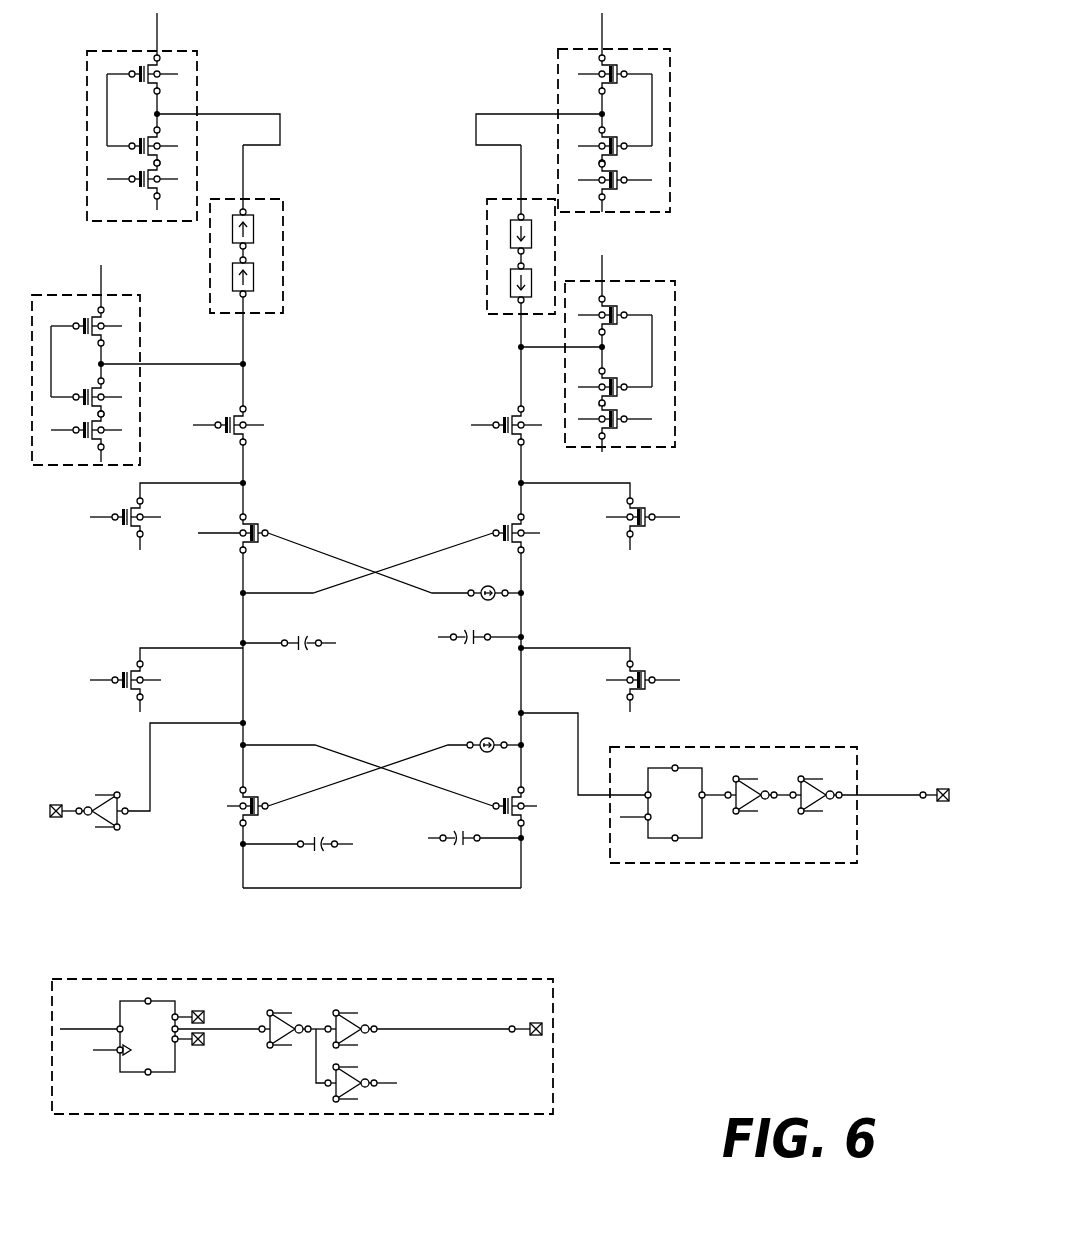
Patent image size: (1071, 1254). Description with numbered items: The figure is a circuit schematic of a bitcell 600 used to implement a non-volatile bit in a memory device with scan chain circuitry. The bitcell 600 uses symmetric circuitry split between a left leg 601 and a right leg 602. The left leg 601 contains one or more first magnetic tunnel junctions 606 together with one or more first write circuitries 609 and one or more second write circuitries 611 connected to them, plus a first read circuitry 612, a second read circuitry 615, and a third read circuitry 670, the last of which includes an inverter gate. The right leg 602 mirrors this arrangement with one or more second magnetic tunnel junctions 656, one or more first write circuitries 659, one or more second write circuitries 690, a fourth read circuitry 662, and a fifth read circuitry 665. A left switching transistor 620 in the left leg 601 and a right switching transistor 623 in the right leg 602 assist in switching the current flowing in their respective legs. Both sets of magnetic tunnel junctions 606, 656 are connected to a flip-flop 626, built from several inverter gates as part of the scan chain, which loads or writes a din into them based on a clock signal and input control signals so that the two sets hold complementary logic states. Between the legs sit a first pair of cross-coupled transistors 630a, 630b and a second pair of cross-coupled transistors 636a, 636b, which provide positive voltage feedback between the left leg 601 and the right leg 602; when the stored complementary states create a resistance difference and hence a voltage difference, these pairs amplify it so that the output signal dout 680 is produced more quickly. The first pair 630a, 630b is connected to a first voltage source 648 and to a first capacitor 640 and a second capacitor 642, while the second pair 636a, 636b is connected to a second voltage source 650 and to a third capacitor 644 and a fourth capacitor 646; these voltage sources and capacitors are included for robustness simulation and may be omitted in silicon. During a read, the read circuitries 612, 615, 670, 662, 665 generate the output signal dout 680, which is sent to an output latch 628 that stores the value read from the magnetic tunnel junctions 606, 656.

The bitcell 600 is at (770, 91).
The left leg 601 is at (219, 871).
The right leg 602 is at (592, 901).
The first magnetic tunnel junctions 606 is at (298, 193).
The first write circuitries 609 is at (128, 44).
The second write circuitries 611 is at (67, 288).
The first read circuitry 612 is at (130, 562).
The second read circuitry 615 is at (128, 662).
The left switching transistor 620 is at (222, 417).
The right switching transistor 623 is at (495, 414).
The flip-flop 626 is at (478, 976).
The output latch 628 is at (755, 731).
The cross-coupled transistor 630a is at (292, 516).
The cross-coupled transistor 630b is at (506, 516).
The cross-coupled transistor 636a is at (294, 784).
The cross-coupled transistor 636b is at (509, 789).
The first capacitor 640 is at (318, 681).
The second capacitor 642 is at (488, 674).
The third capacitor 644 is at (330, 881).
The fourth capacitor 646 is at (477, 881).
The first voltage source 648 is at (503, 581).
The second voltage source 650 is at (503, 727).
The second magnetic tunnel junctions 656 is at (485, 189).
The first write circuitries 659 is at (647, 44).
The fourth read circuitry 662 is at (673, 559).
The fifth read circuitry 665 is at (675, 662).
The third read circuitry 670 is at (113, 779).
The output signal dout 680 is at (570, 707).
The second write circuitries 690 is at (658, 274).